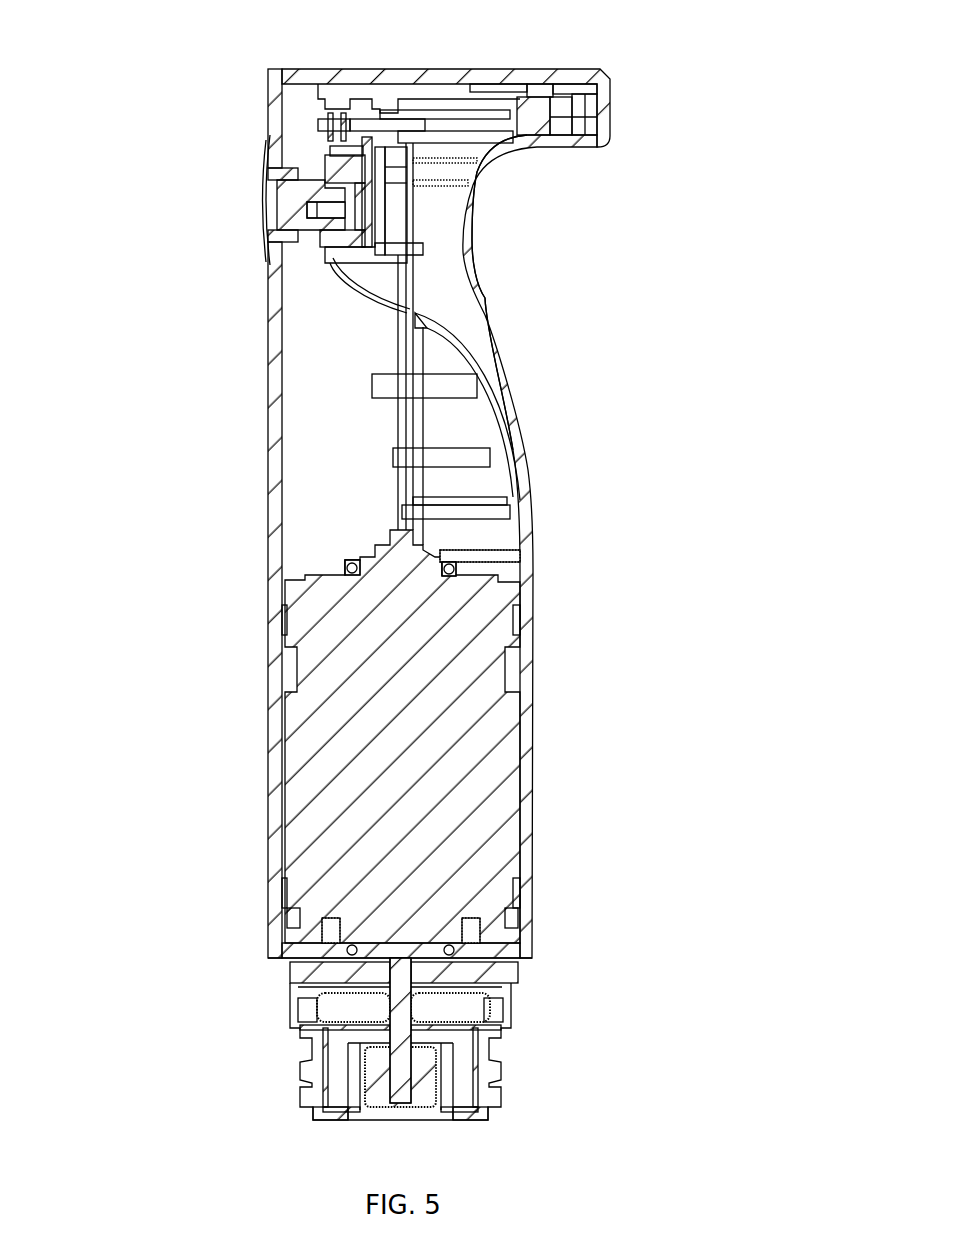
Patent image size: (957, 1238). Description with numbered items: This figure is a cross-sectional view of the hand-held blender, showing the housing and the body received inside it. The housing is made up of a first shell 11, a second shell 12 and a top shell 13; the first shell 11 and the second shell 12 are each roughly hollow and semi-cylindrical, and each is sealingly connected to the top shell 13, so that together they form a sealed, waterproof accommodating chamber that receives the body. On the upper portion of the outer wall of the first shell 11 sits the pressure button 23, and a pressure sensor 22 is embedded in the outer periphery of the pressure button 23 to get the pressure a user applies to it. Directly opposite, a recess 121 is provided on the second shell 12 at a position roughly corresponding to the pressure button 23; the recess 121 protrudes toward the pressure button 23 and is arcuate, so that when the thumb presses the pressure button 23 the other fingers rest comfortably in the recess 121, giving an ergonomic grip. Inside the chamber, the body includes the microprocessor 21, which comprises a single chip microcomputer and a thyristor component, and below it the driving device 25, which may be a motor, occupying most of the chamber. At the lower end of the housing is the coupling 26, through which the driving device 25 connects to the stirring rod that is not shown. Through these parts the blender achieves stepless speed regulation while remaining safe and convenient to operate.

The first shell 11 is at (275, 512).
The second shell 12 is at (525, 517).
The recess 121 is at (470, 262).
The top shell 13 is at (493, 76).
The microprocessor 21 is at (408, 373).
The pressure sensor 22 is at (338, 178).
The pressure button 23 is at (277, 204).
The driving device 25 is at (443, 738).
The coupling 26 is at (400, 1037).